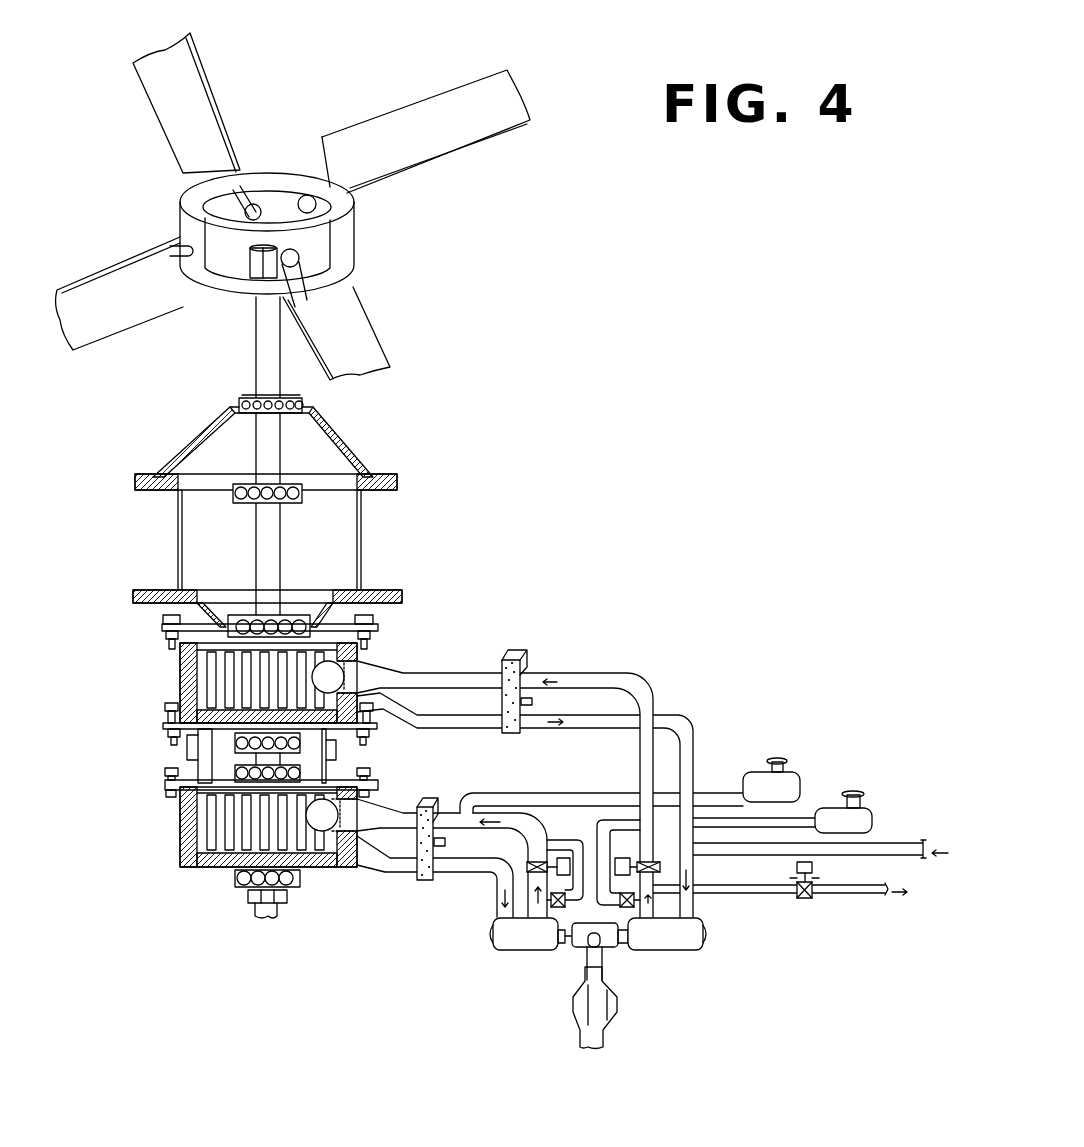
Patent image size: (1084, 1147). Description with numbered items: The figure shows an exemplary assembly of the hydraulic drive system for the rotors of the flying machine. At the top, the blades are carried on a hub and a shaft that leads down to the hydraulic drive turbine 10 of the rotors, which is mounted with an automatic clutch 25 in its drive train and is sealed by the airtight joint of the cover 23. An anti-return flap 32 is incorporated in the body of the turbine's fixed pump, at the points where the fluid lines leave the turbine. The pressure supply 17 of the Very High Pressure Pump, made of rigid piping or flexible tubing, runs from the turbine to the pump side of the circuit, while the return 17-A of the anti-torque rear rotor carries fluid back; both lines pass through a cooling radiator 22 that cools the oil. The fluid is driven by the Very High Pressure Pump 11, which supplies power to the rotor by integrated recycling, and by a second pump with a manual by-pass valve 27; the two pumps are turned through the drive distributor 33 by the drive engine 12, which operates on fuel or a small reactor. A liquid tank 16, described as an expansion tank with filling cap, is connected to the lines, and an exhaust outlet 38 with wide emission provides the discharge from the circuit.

The hydraulic drive turbine 10 is at (212, 867).
The Very High Pressure Pump 11 is at (507, 948).
The drive engine 12 is at (592, 1005).
The liquid tank 16 is at (785, 780).
The pressure supply piping 17 is at (427, 680).
The return of anti-torque rear rotor 17-A is at (468, 722).
The cooling radiator 22 is at (525, 662).
The airtight joint of the cover 23 is at (528, 862).
The automatic clutch 25 is at (177, 807).
The manual by-pass valve 27 is at (705, 928).
The anti-return flap 32 is at (357, 667).
The drive distributor 33 is at (610, 943).
The exhaust outlet 38 is at (805, 897).